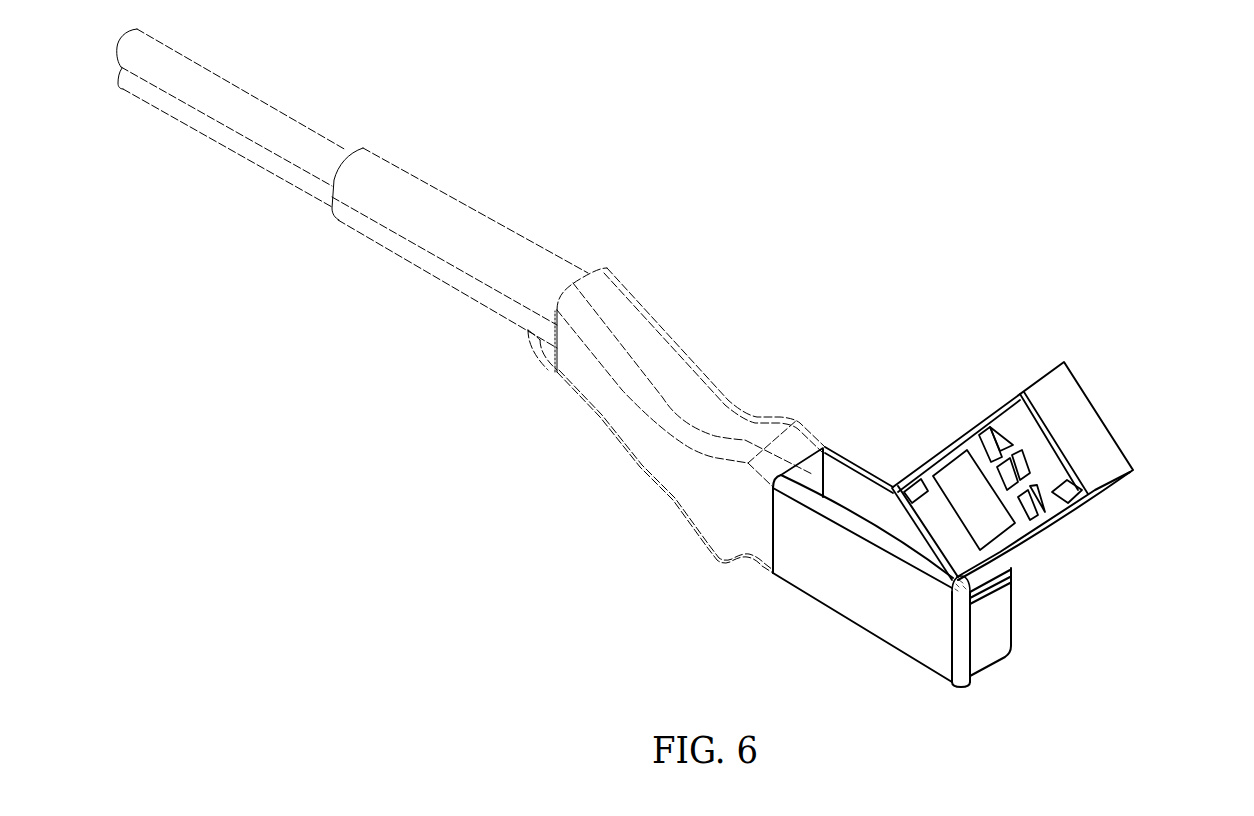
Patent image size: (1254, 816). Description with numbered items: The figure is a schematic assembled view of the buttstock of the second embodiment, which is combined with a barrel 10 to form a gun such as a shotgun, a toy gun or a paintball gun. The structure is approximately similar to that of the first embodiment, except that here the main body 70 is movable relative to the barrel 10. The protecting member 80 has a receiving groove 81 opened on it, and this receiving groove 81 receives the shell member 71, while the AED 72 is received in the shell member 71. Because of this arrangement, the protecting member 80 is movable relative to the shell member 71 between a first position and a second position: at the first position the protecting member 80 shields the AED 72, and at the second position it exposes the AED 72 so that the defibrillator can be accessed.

The barrel 10 is at (453, 215).
The main body 70 is at (1183, 313).
The shell member 71 is at (1067, 388).
The AED 72 is at (1038, 452).
The protecting member 80 is at (823, 568).
The receiving groove 81 is at (847, 487).